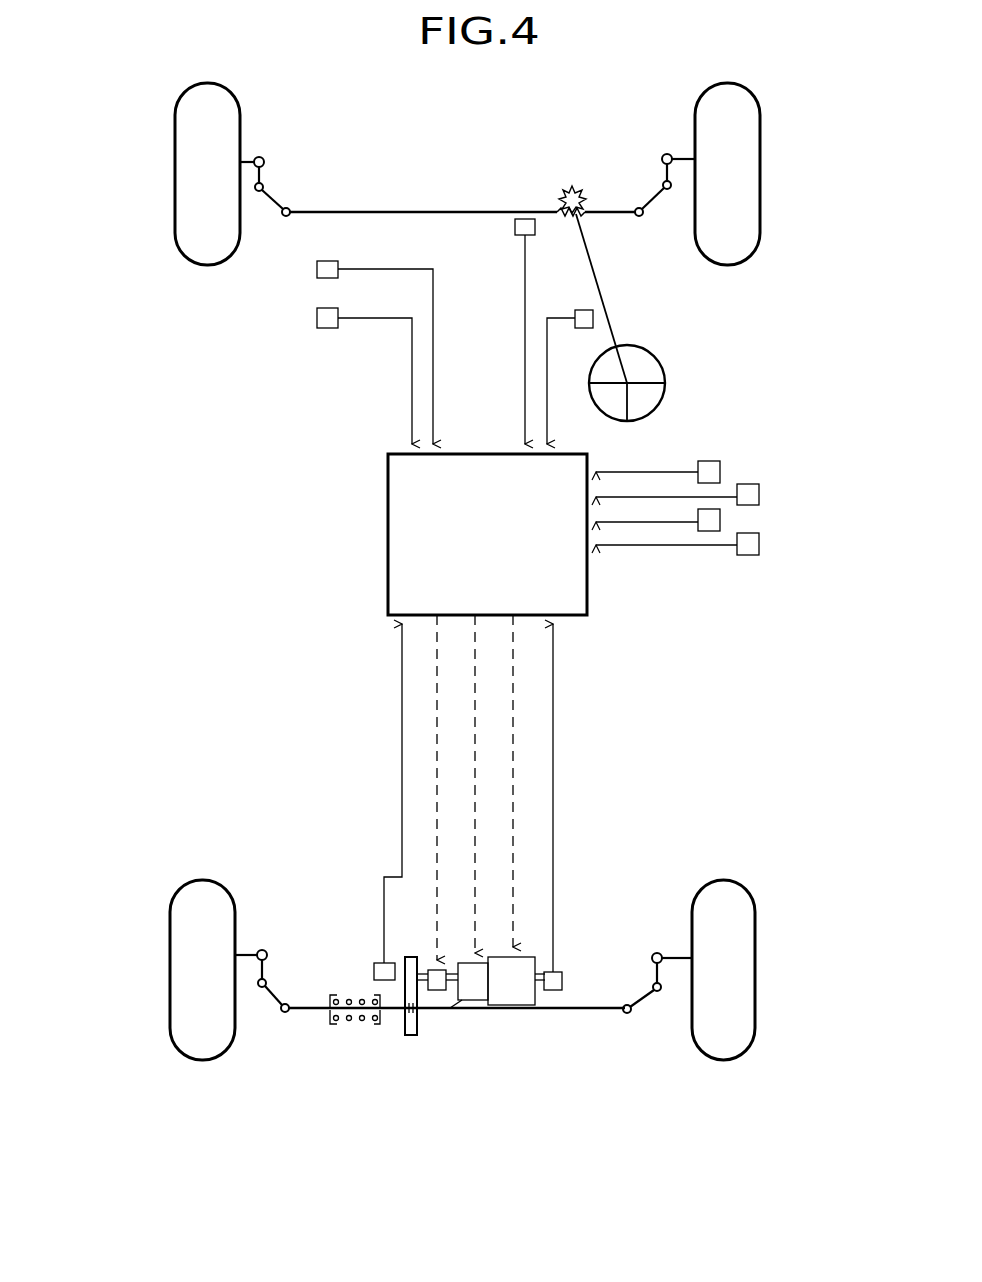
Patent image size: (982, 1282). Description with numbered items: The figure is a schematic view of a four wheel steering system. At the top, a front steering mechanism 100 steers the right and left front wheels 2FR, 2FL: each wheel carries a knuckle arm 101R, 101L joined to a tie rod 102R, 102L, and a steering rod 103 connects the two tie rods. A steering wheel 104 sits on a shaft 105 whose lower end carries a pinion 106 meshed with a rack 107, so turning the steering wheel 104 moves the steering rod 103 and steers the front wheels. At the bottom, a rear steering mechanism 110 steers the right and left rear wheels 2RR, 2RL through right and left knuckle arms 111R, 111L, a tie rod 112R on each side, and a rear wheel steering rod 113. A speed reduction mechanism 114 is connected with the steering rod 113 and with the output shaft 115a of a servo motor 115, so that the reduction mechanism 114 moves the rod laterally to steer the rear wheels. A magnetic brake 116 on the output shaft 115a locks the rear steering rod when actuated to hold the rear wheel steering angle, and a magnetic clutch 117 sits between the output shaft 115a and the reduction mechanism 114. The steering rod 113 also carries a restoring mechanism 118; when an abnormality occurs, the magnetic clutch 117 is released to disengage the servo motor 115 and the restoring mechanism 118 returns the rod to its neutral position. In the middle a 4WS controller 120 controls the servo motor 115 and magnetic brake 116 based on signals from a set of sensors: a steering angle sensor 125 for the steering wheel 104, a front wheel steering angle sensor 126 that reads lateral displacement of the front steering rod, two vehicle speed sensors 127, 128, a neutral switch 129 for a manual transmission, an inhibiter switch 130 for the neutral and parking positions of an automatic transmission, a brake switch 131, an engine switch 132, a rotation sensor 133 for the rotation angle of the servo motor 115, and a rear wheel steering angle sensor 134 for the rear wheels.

The left front wheel 2FL is at (175, 118).
The right front wheel 2FR is at (760, 134).
The left rear wheel 2RL is at (170, 935).
The right rear wheel 2RR is at (755, 932).
The front steering mechanism 100 is at (435, 182).
The left knuckle arm 101L is at (260, 175).
The right knuckle arm 101R is at (667, 175).
The left tie rod 102L is at (273, 202).
The right tie rod 102R is at (660, 200).
The steering rod 103 is at (482, 212).
The steering wheel 104 is at (666, 375).
The shaft 105 is at (610, 321).
The pinion 106 is at (570, 187).
The rack 107 is at (586, 222).
The rear steering mechanism 110 is at (496, 1067).
The left knuckle arm 111L is at (266, 968).
The right knuckle arm 111R is at (653, 973).
The tie rod 112R is at (272, 998).
The rear wheel steering rod 113 is at (577, 1010).
The speed reduction mechanism 114 is at (406, 1025).
The servo motor 115 is at (523, 1010).
The output shaft 115a is at (455, 1008).
The magnetic brake 116 is at (471, 1002).
The magnetic clutch 117 is at (432, 970).
The restoring mechanism 118 is at (340, 1032).
The 4WS controller 120 is at (388, 472).
The steering angle sensor 125 is at (581, 304).
The front wheel steering angle sensor 126 is at (508, 230).
The vehicle speed sensor 127 is at (340, 265).
The vehicle speed sensor 128 is at (327, 332).
The neutral switch 129 is at (718, 461).
The inhibiter switch 130 is at (759, 489).
The brake switch 131 is at (720, 520).
The engine switch 132 is at (759, 545).
The rotation sensor 133 is at (559, 973).
The rear wheel steering angle sensor 134 is at (372, 975).